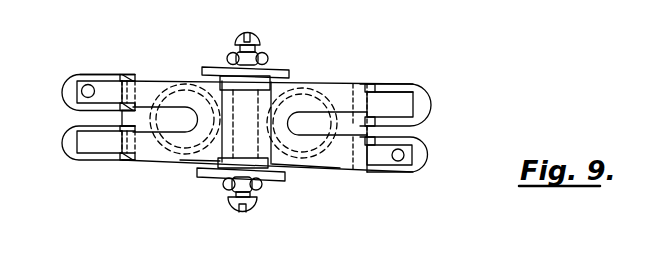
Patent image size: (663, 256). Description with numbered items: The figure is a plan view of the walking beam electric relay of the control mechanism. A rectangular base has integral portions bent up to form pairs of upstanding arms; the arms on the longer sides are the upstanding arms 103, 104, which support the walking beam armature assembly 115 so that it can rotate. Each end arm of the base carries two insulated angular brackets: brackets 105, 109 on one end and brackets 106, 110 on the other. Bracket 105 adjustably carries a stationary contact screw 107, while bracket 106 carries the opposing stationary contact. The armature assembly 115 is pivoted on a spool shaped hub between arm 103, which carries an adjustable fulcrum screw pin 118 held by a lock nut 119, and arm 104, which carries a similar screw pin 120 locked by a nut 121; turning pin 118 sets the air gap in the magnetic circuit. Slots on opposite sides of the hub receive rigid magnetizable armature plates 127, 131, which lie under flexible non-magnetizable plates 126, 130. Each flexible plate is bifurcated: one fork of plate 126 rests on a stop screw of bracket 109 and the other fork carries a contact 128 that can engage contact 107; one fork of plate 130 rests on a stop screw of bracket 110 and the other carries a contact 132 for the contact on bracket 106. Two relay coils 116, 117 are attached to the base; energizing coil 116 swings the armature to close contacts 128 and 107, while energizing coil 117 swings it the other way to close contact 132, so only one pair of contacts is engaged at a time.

The upstanding arm 103 is at (277, 181).
The upstanding arm 104 is at (290, 72).
The angular bracket 105 is at (62, 91).
The angular bracket 106 is at (424, 168).
The contact screw 107 is at (130, 50).
The angular bracket 109 is at (62, 144).
The angular bracket 110 is at (430, 98).
The walking beam armature assembly 115 is at (243, 110).
The relay coil 116 is at (186, 168).
The relay coil 117 is at (306, 164).
The fulcrum screw pin 118 is at (232, 206).
The lock nut 119 is at (228, 186).
The screw pin 120 is at (258, 41).
The nut 121 is at (266, 59).
The flexible non-magnetizable plate 126 is at (160, 88).
The armature plate 127 is at (132, 120).
The contact 128 is at (86, 88).
The flexible non-magnetizable plate 130 is at (395, 103).
The armature plate 131 is at (345, 118).
The contact 132 is at (397, 162).